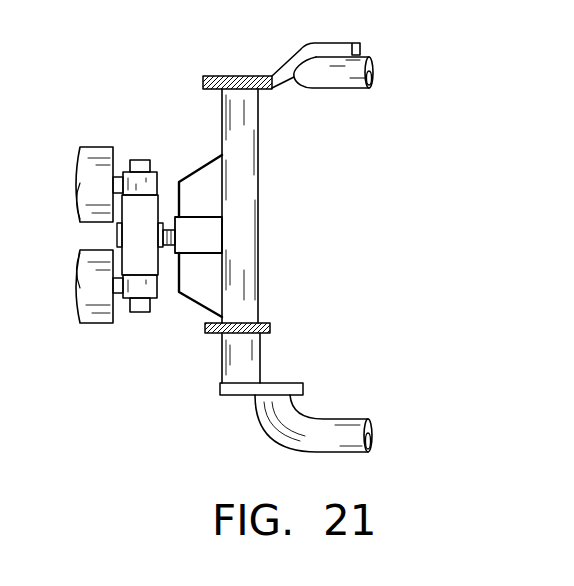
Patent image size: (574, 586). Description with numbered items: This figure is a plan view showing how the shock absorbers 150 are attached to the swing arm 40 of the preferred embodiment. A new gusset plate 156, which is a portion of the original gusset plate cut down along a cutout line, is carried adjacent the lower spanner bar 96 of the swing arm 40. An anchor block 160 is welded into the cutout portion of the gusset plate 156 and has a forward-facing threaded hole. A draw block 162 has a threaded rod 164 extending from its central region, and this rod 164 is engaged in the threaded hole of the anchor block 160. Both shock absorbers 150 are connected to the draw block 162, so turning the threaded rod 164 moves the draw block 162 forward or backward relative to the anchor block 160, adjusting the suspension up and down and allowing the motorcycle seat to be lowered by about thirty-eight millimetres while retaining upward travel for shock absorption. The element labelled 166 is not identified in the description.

The swing arm of the preferred embodiment 40 is at (338, 43).
The lower spanner bar 96 is at (258, 205).
The shock absorbers 150 is at (100, 145).
The gusset plate 156 is at (210, 190).
The anchor block 160 is at (203, 243).
The draw block 162 is at (118, 250).
The threaded rod 164 is at (173, 229).
The end cap 166 is at (160, 298).